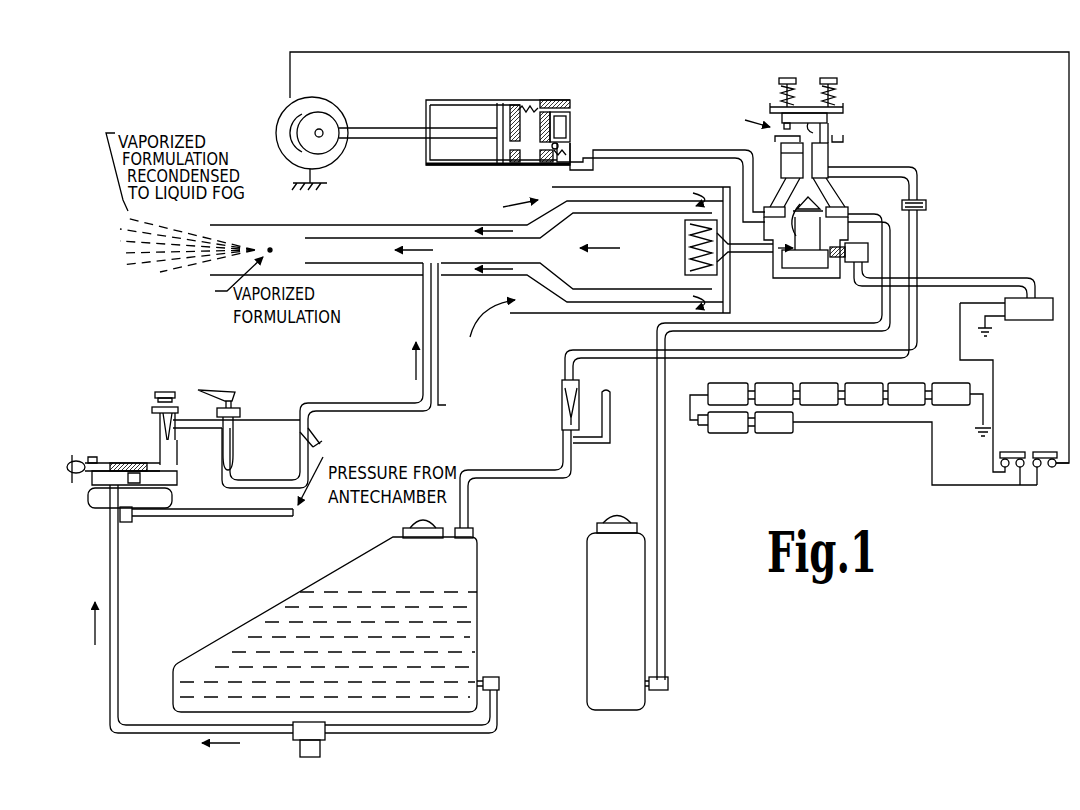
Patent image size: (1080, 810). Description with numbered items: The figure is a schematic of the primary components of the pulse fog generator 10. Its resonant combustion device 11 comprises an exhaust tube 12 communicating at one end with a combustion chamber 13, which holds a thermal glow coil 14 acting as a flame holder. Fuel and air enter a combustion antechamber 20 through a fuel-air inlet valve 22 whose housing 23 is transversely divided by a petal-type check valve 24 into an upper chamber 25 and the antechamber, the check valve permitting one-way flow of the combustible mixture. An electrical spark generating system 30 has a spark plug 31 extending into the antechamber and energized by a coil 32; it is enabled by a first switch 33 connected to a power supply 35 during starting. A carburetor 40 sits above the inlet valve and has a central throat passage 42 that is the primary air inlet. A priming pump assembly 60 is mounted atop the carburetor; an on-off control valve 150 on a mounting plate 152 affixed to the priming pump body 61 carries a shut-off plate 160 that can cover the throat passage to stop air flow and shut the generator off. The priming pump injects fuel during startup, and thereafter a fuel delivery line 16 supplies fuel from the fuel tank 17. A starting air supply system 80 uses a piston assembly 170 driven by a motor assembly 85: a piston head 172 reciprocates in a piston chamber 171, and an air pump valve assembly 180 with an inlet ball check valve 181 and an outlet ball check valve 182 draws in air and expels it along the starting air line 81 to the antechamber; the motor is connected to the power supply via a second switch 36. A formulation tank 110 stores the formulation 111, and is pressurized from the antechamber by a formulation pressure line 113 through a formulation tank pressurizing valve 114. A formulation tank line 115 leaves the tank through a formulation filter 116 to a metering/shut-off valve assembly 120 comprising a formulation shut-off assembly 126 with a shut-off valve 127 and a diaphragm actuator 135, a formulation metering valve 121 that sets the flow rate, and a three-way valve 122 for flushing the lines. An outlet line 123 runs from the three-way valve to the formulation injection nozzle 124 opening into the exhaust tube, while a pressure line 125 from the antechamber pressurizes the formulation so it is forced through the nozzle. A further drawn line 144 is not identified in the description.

The pulse fog generator 10 is at (573, 48).
The resonant combustion device 11 is at (466, 251).
The exhaust tube 12 is at (420, 237).
The combustion chamber 13 is at (638, 272).
The thermal glow coil 14 is at (688, 241).
The fuel delivery line 16 is at (668, 583).
The fuel tank 17 is at (587, 584).
The combustion antechamber 20 is at (811, 274).
The fuel-air inlet valve 22 is at (848, 198).
The housing 23 is at (830, 192).
The petal-type check valve 24 is at (783, 194).
The upper chamber 25 is at (807, 216).
The electrical spark generating system 30 is at (987, 268).
The spark plug 31 is at (843, 270).
The coil 32 is at (1040, 324).
The first switch 33 is at (1022, 451).
The power supply 35 is at (772, 446).
The second switch 36 is at (1047, 470).
The carburetor 40 is at (832, 158).
The central throat passage 42 is at (807, 165).
The priming pump assembly 60 is at (838, 93).
The priming pump body 61 is at (845, 113).
The starting air supply system 80 is at (386, 128).
The starting air line 81 is at (704, 148).
The motor assembly 85 is at (341, 152).
The formulation tank 110 is at (345, 616).
The formulation 111 is at (419, 576).
The formulation pressure line 113 is at (540, 468).
The formulation tank pressurizing valve 114 is at (561, 404).
The formulation tank line 115 is at (118, 582).
The formulation filter 116 is at (324, 748).
The metering/shut-off valve assembly 120 is at (209, 397).
The formulation metering valve 121 is at (169, 392).
The three-way valve 122 is at (232, 392).
The outlet line 123 is at (393, 399).
The formulation injection nozzle 124 is at (422, 295).
The pressure line 125 is at (328, 436).
The formulation shut-off assembly 126 is at (174, 446).
The shut-off valve 127 is at (77, 457).
The diaphragm actuator 135 is at (173, 500).
The pressure tube 144 is at (286, 518).
The on-off control valve 150 is at (775, 98).
The mounting plate 152 is at (805, 103).
The shut-off plate 160 is at (812, 124).
The piston assembly 170 is at (498, 115).
The piston chamber 171 is at (432, 100).
The piston head 172 is at (500, 148).
The air pump valve assembly 180 is at (574, 117).
The inlet ball check valve 181 is at (542, 100).
The outlet ball check valve 182 is at (539, 162).